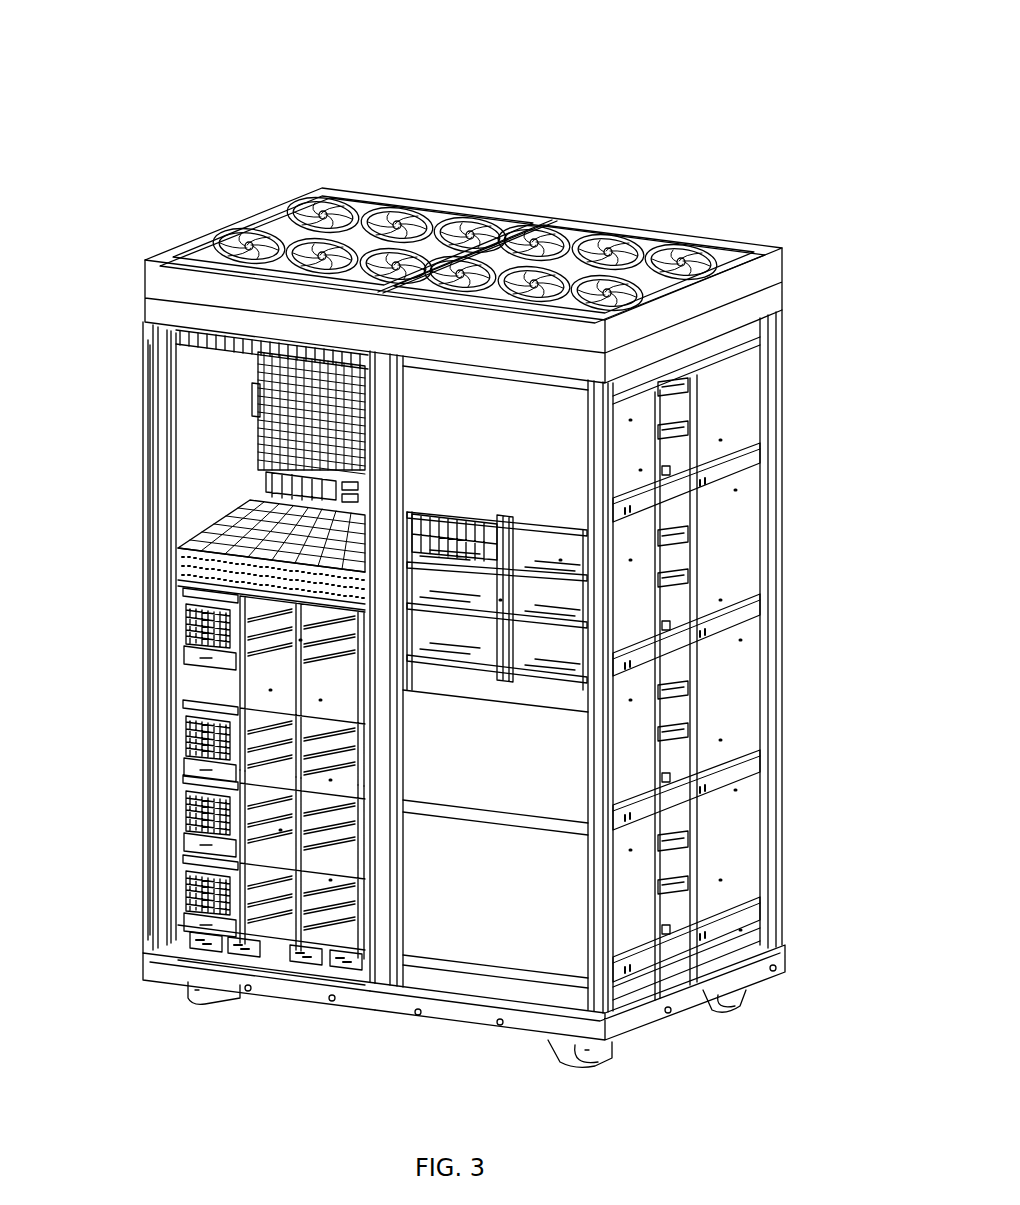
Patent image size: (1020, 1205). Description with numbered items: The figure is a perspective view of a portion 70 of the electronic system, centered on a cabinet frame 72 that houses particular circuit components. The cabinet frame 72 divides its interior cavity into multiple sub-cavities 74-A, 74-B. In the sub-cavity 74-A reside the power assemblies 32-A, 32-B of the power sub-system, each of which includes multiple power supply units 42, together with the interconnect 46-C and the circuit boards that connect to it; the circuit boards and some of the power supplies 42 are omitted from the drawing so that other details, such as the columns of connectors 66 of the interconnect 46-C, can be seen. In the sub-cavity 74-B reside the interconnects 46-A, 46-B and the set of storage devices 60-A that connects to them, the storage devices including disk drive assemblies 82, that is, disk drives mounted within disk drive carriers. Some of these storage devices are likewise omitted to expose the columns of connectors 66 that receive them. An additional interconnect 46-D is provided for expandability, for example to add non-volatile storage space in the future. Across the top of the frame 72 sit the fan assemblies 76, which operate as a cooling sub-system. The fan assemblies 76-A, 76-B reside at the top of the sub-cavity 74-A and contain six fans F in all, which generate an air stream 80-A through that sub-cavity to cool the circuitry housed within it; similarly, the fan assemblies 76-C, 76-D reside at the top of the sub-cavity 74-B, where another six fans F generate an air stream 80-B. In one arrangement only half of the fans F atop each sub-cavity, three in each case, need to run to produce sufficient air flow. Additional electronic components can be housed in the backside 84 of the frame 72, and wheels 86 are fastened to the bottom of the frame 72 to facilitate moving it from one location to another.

The portion of the electronic system 70 is at (757, 88).
The fan assemblies 76 is at (296, 88).
The fan assembly 76-A is at (205, 164).
The fan assembly 76-B is at (155, 215).
The fan assembly 76-C is at (667, 180).
The fan assembly 76-D is at (792, 210).
The fans F is at (295, 183).
The air stream 80-A is at (366, 68).
The air stream 80-B is at (615, 118).
The interconnect 46-A is at (714, 408).
The interconnect 46-B is at (716, 582).
The interconnect 46-C is at (250, 366).
The additional interconnect 46-D is at (716, 842).
The backside of the frame 84 is at (812, 408).
The columns of connectors 66 is at (245, 464).
The cabinet frame 72 is at (152, 495).
The set of storage devices 60-A is at (466, 496).
The disk drive assemblies 82 is at (505, 515).
The power assembly 32-A is at (118, 645).
The power assembly 32-B is at (122, 856).
The power supply units 42 is at (180, 705).
The sub-cavity 74-A is at (270, 985).
The sub-cavity 74-B is at (476, 1010).
The wheels 86 is at (618, 1038).